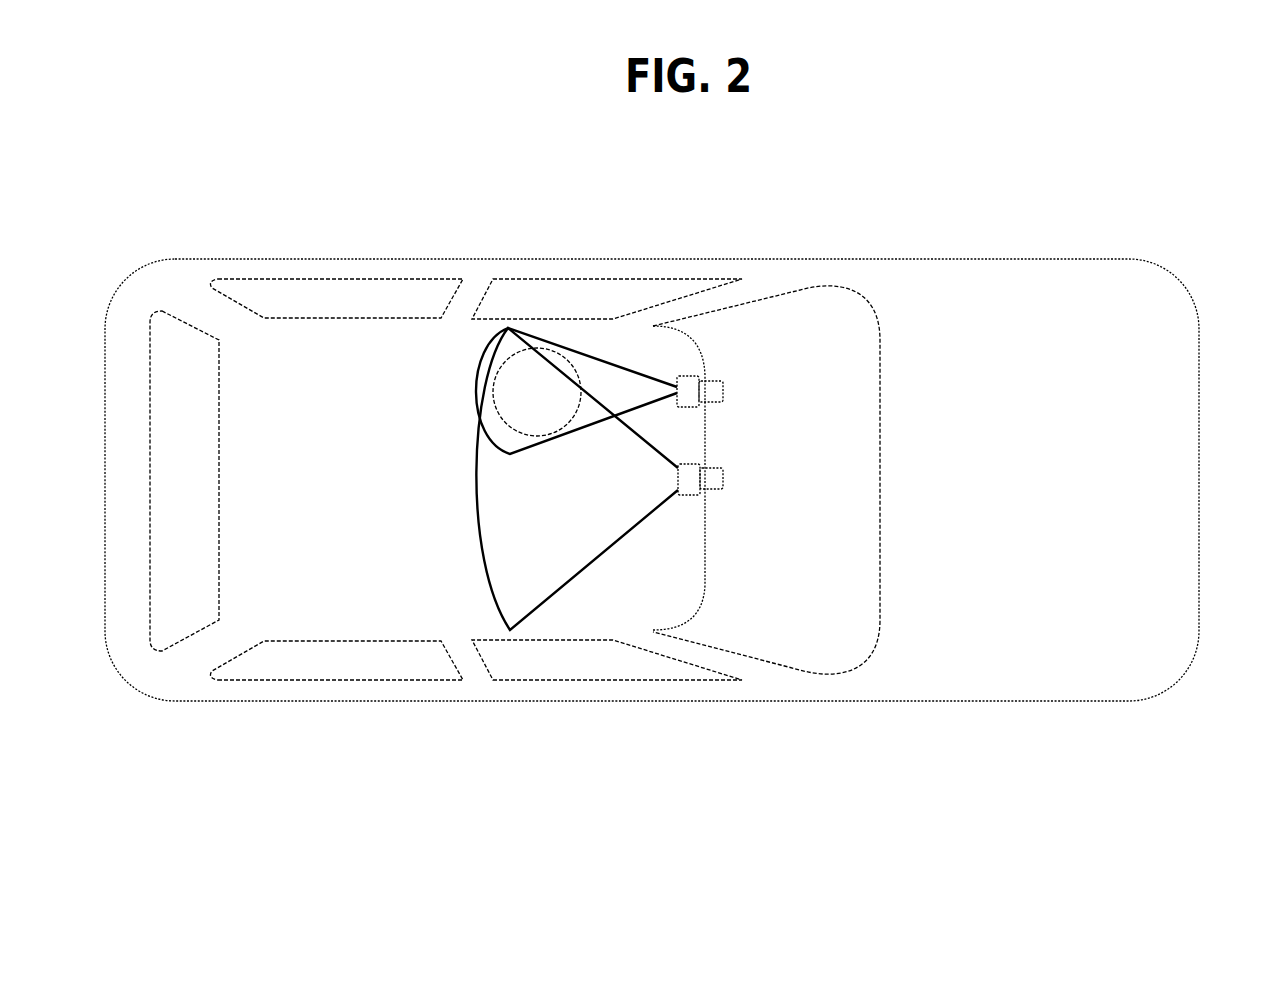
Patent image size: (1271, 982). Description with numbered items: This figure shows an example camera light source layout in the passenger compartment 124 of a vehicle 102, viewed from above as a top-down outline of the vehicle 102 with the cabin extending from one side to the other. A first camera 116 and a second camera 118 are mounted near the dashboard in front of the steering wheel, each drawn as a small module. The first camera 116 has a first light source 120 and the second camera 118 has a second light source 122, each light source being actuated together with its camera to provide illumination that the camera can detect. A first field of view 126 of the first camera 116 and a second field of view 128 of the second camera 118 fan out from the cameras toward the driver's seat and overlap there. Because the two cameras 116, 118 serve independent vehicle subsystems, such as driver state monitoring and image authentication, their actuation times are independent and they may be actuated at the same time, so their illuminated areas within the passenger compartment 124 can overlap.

The vehicle 102 is at (596, 702).
The first camera 116 is at (723, 393).
The second camera 118 is at (723, 489).
The first light source 120 is at (688, 376).
The second light source 122 is at (688, 497).
The passenger compartment 124 is at (353, 643).
The first field of view 126 is at (508, 328).
The second field of view 128 is at (507, 633).